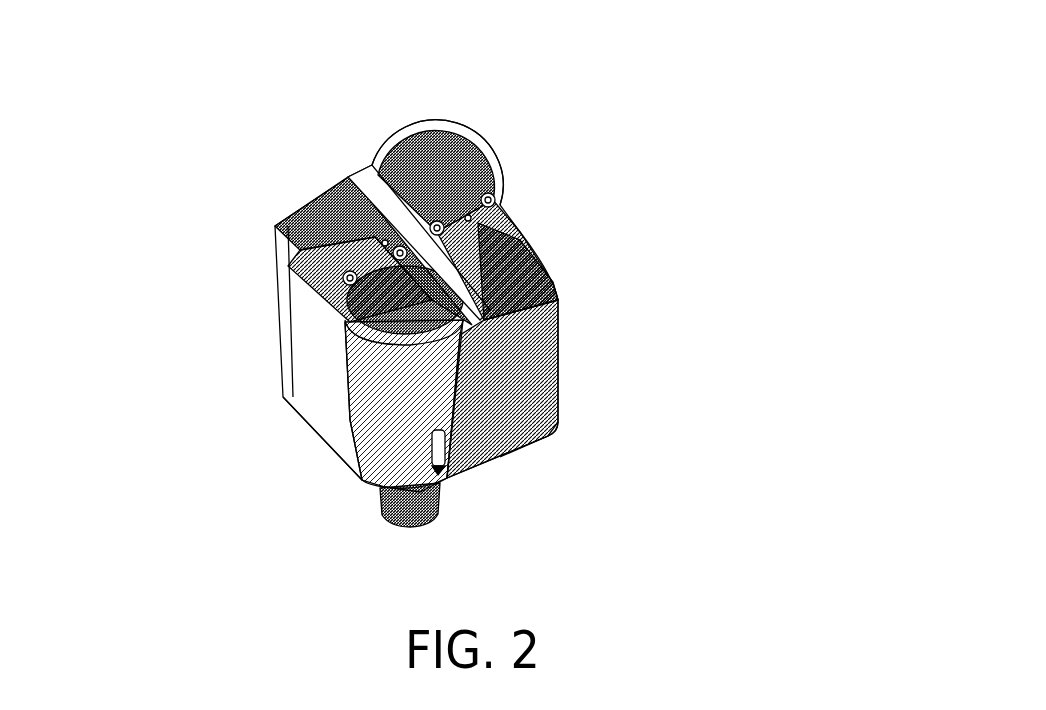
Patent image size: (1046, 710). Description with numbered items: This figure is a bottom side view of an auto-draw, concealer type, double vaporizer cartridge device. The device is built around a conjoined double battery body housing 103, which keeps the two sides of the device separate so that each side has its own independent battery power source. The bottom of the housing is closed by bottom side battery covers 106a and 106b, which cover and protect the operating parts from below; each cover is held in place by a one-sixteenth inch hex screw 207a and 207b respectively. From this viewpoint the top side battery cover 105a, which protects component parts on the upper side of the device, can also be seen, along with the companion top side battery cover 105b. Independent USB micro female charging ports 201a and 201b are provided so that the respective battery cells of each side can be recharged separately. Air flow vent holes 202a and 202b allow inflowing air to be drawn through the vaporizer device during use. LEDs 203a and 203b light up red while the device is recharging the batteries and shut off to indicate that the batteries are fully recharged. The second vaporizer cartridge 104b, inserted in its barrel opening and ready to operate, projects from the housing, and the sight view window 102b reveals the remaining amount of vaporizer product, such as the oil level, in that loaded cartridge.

The conjoined double battery body housing 103 is at (503, 373).
The top side battery cover 105a is at (522, 443).
The top side battery cover 105b is at (278, 445).
The bottom side battery cover 106a is at (517, 282).
The bottom side battery cover 106b is at (313, 218).
The sight view window 102b is at (435, 458).
The vaporizer cartridge 104b is at (418, 510).
The USB micro female charging port 201a is at (485, 238).
The USB micro female charging port 201b is at (337, 273).
The air flow vent hole 202a is at (427, 182).
The air flow vent hole 202b is at (410, 300).
The LED 203a is at (470, 218).
The LED 203b is at (390, 262).
The hex screw 207a is at (437, 226).
The hex screw 207b is at (382, 238).